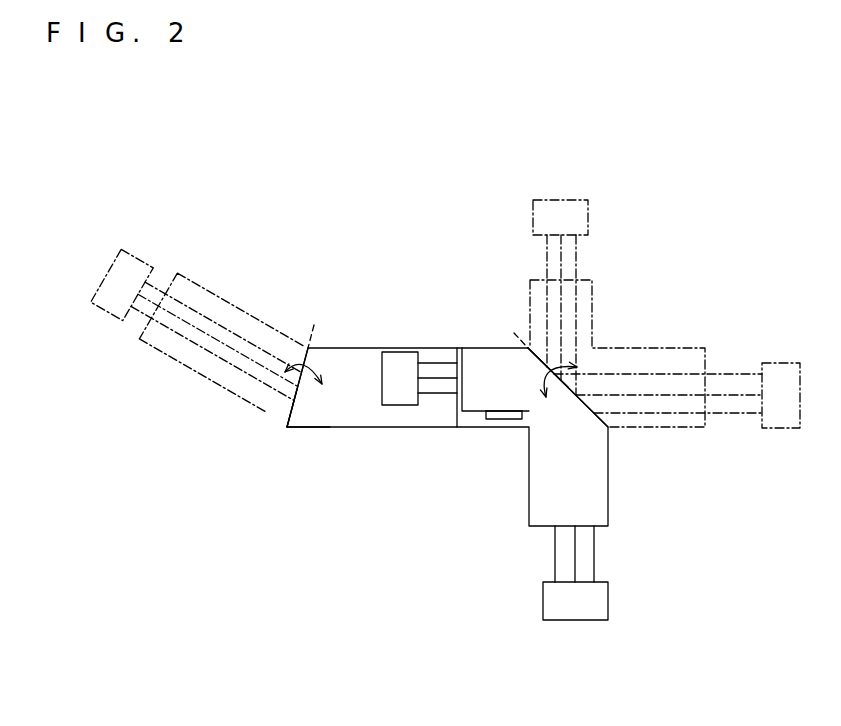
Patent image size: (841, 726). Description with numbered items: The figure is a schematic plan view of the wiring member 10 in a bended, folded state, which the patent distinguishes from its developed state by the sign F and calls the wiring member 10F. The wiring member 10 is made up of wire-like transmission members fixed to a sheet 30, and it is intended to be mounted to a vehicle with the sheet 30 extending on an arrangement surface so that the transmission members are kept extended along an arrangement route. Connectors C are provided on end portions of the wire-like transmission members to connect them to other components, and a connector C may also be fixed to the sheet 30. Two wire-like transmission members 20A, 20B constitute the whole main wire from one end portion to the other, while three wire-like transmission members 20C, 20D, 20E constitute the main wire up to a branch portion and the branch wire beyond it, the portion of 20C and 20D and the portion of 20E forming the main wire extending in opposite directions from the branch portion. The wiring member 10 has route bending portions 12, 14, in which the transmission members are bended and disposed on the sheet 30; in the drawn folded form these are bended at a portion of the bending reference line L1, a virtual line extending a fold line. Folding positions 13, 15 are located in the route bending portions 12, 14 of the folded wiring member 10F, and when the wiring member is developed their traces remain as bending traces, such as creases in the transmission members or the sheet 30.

The wiring member 10 is at (175, 178).
The route bending portion 12 is at (311, 320).
The folding position 13 is at (293, 398).
The route bending portion 14 is at (521, 328).
The folding position 15 is at (594, 411).
The sheet 30 is at (354, 360).
The wire-like transmission member 20A is at (594, 566).
The wire-like transmission member 20B is at (578, 541).
The wire-like transmission member 20C is at (447, 378).
The wire-like transmission member 20D is at (442, 362).
The wire-like transmission member 20E is at (430, 397).
The wiring member in folded state 10F is at (468, 478).
The connector C is at (398, 358).
The bending reference line L1 is at (285, 438).